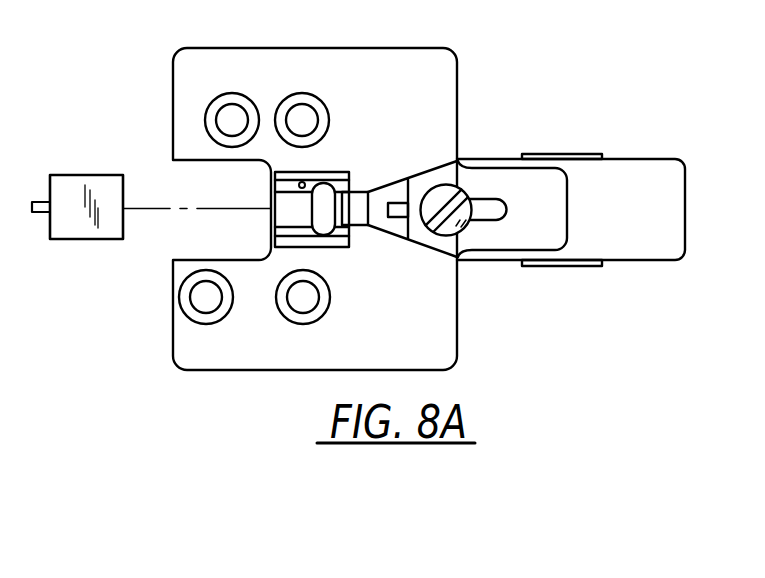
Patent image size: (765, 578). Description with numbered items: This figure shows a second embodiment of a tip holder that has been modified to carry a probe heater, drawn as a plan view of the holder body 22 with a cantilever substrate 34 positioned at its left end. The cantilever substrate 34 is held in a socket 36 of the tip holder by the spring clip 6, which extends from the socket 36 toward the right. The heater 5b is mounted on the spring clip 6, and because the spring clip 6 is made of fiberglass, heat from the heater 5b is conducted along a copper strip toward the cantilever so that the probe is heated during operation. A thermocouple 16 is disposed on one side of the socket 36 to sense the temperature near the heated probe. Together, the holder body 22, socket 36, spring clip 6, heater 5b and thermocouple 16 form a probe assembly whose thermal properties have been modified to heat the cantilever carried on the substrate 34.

The mounting block 22 is at (387, 57).
The cantilever substrate 34 is at (82, 175).
The socket 36 is at (275, 174).
The thermocouple 16 is at (304, 185).
The heater 5b is at (393, 205).
The spring clip 6 is at (538, 180).